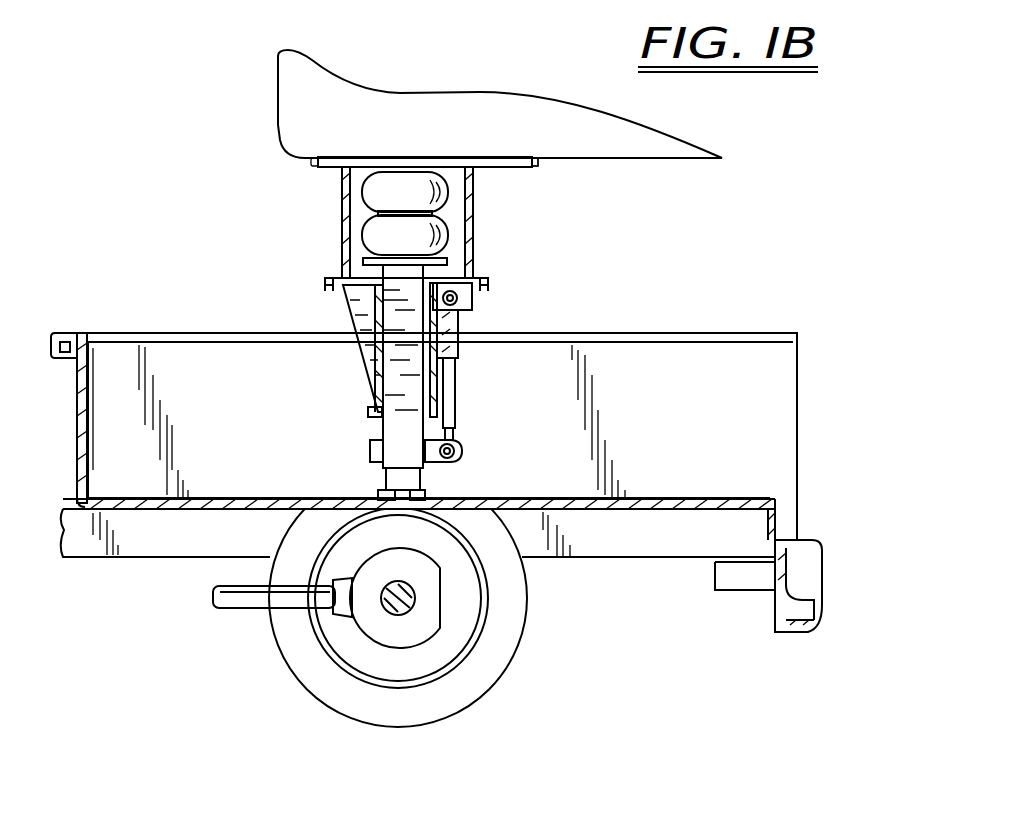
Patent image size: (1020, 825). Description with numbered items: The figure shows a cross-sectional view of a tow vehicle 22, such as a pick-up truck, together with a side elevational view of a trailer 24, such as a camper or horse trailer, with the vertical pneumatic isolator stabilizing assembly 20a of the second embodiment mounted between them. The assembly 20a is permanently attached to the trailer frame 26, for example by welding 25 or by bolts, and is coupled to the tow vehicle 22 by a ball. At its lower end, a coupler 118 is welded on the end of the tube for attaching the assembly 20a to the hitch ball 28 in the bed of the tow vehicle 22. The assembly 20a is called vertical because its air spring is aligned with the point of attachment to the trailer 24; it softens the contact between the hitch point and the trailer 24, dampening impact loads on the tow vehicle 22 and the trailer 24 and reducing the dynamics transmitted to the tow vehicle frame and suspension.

The trailer 24 is at (268, 110).
The welding 25 is at (315, 163).
The trailer frame 26 is at (609, 166).
The tow vehicle 22 is at (70, 404).
The vertical pneumatic isolator stabilizing assembly 20a is at (468, 421).
The coupler 118 is at (382, 496).
The hitch ball 28 is at (408, 496).